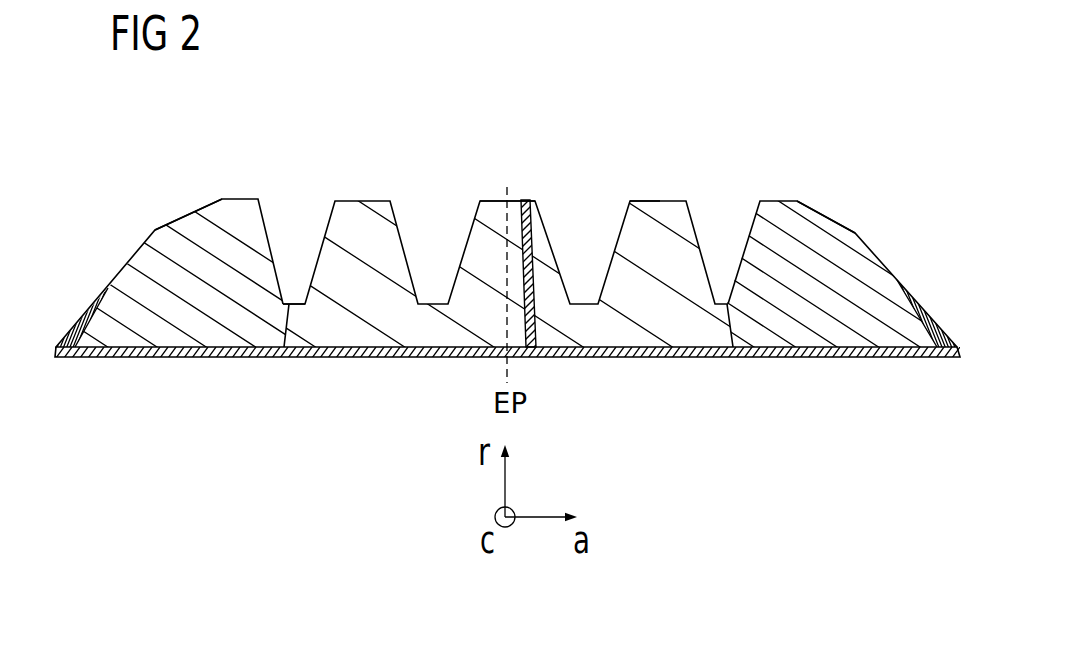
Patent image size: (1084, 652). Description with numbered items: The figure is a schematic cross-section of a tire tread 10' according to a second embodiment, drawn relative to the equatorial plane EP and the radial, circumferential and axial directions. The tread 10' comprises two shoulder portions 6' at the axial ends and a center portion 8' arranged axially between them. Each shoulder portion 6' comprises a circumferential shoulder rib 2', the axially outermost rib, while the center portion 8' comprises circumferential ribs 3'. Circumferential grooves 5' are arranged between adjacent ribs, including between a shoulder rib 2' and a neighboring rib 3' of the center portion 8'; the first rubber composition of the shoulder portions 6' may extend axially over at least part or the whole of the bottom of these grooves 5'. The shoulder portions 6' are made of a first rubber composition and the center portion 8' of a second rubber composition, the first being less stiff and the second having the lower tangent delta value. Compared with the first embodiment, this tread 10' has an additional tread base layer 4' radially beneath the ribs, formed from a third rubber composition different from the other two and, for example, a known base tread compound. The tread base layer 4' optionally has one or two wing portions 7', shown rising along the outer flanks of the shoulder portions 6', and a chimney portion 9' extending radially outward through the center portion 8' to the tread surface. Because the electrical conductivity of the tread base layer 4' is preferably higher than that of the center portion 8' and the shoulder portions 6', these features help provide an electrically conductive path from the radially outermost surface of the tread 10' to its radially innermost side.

The shoulder rib 2' is at (508, 300).
The rib 3' is at (510, 311).
The tread base layer 4' is at (508, 401).
The grooves 5' is at (302, 233).
The shoulder portions 6' is at (505, 164).
The wing portions 7' is at (505, 281).
The center portion 8' is at (645, 148).
The chimney portion 9' is at (530, 231).
The tire tread 10' is at (490, 142).